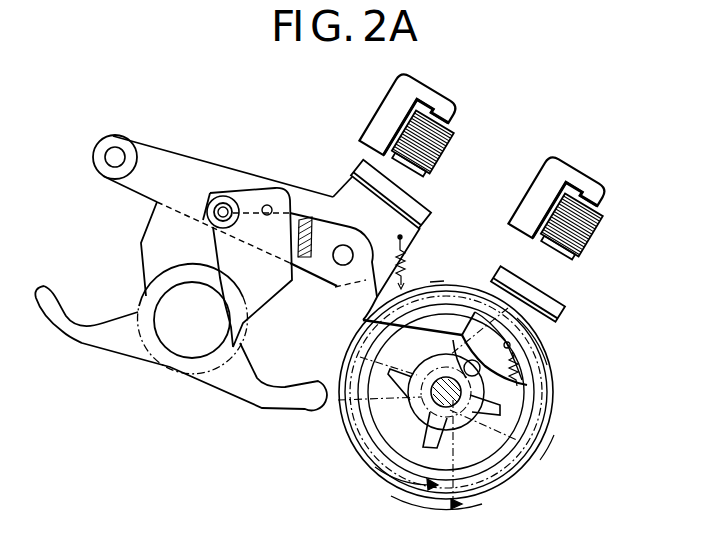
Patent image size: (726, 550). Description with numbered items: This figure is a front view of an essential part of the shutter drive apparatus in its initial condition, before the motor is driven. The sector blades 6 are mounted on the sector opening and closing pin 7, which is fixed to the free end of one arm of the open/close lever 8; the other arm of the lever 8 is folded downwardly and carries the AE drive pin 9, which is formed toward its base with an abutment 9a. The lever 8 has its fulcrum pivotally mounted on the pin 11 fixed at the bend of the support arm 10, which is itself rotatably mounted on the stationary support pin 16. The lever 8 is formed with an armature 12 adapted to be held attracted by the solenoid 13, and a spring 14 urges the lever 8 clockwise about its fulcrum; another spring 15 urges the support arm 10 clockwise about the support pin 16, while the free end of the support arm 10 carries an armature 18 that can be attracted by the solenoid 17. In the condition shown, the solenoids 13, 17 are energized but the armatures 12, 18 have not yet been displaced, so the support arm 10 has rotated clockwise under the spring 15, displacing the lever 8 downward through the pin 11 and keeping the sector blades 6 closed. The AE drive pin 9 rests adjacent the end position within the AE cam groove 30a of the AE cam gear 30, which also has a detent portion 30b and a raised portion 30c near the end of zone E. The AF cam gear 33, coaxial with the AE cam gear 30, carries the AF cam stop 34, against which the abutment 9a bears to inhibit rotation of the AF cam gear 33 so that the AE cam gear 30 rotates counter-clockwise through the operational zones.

The sector blades 6 is at (139, 352).
The sector opening and closing pin 7 is at (214, 212).
The open/close lever 8 is at (419, 336).
The AE drive pin 9 is at (512, 397).
The abutment 9a is at (463, 312).
The support arm 10 is at (299, 197).
The pin 11 is at (347, 251).
The armature 12 is at (550, 312).
The solenoid 13 is at (578, 176).
The spring 14 is at (522, 378).
The spring 15 is at (404, 258).
The support pin 16 is at (118, 152).
The solenoid 17 is at (425, 90).
The armature 18 is at (408, 202).
The AE cam gear 30 is at (412, 492).
The AE cam 30a is at (363, 437).
The detent portion 30b is at (513, 467).
The raised portion 30c is at (457, 325).
The AF cam gear 33 is at (367, 437).
The AF cam stop 34 is at (380, 372).